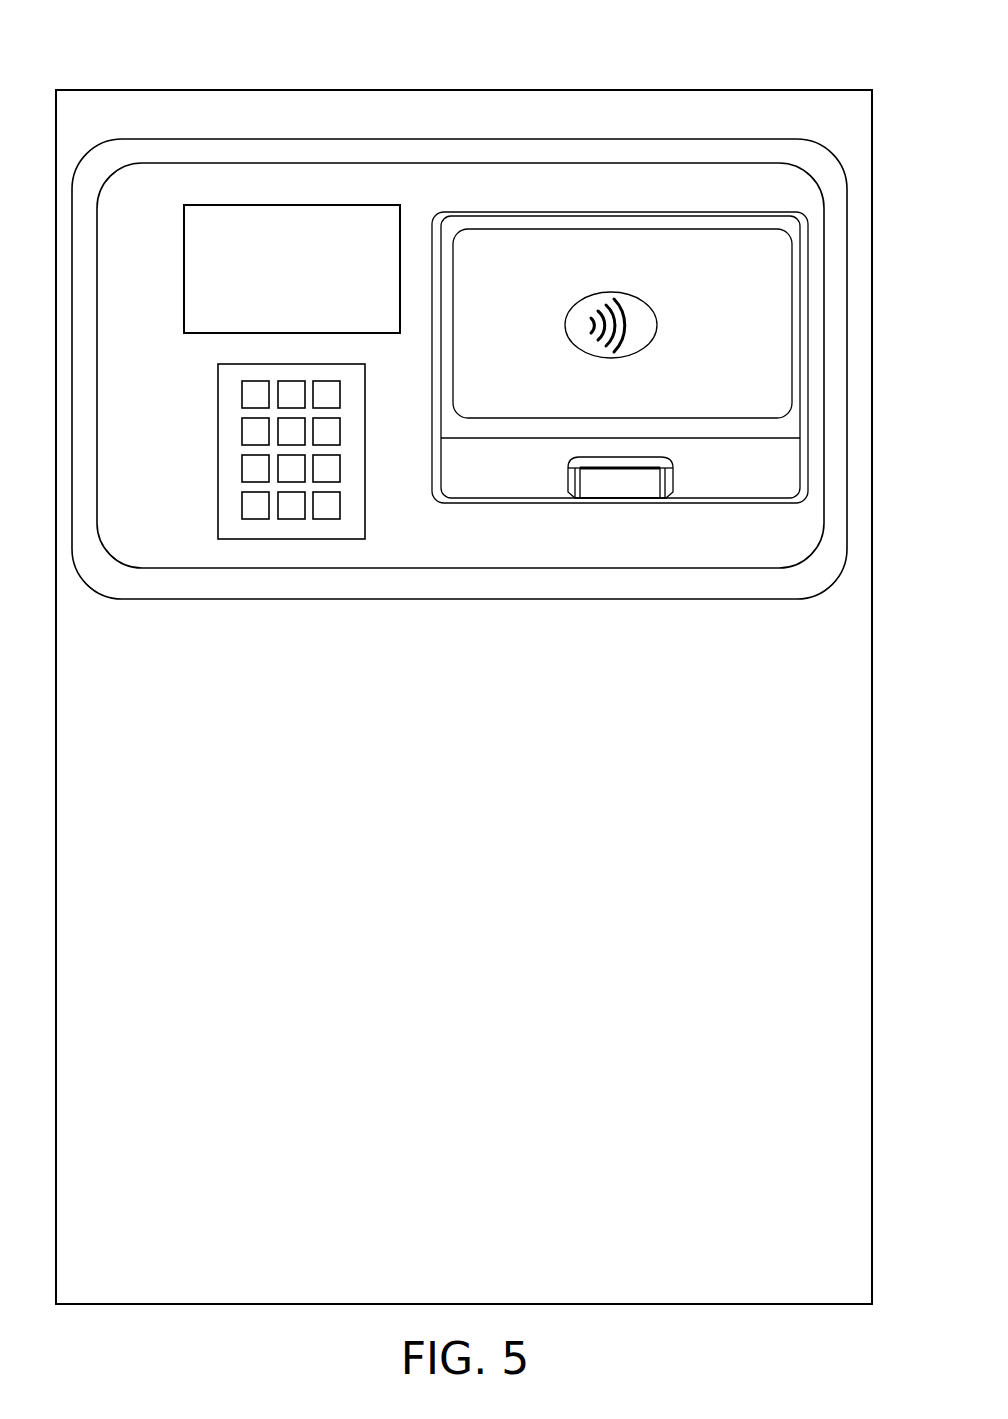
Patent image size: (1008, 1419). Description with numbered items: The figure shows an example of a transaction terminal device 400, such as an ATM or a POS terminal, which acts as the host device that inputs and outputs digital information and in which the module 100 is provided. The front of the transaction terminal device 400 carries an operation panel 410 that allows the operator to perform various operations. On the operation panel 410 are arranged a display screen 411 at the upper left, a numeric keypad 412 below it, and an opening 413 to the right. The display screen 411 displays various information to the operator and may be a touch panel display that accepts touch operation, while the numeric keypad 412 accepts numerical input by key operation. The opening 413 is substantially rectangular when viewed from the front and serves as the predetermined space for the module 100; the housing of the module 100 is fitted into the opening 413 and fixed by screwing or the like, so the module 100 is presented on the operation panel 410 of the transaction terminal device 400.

The transaction terminal device 400 is at (265, 90).
The operation panel 410 is at (167, 137).
The display screen 411 is at (370, 205).
The numeric keypad 412 is at (365, 397).
The opening 413 is at (617, 212).
The module 100 is at (705, 213).